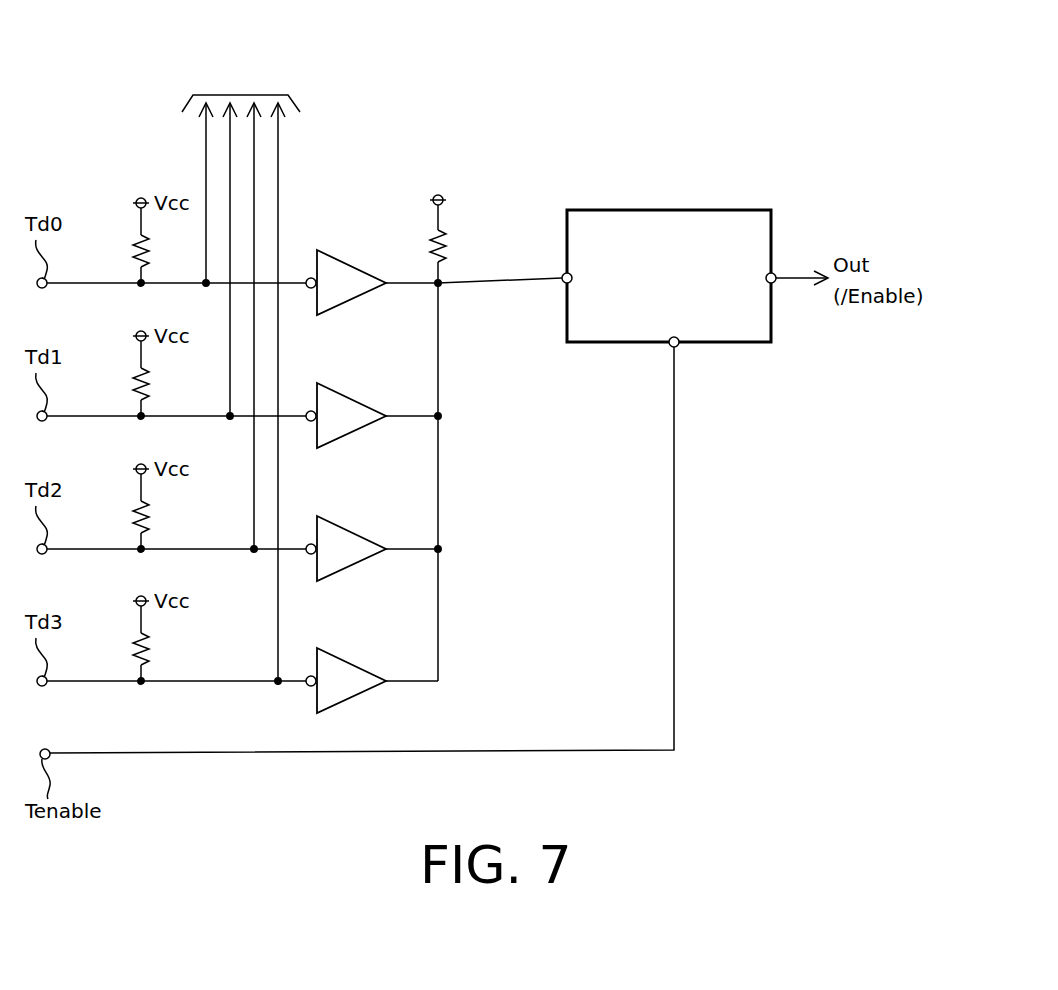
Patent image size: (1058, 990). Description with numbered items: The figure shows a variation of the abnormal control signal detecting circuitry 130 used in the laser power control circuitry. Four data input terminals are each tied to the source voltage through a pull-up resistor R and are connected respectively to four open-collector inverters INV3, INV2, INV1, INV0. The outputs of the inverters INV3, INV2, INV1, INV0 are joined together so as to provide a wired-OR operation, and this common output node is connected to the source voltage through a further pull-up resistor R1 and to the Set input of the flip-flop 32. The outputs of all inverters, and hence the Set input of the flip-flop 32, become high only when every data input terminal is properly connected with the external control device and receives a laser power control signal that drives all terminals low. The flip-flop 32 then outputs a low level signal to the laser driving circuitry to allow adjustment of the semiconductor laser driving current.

The abnormal control signal detecting circuitry 130 is at (378, 92).
The flip-flop 32 is at (637, 208).
The pull-up resistor R is at (148, 436).
The pull-up resistor R1 is at (448, 223).
The open-collector inverter INV0 is at (343, 303).
The open-collector inverter INV1 is at (343, 436).
The open-collector inverter INV2 is at (343, 569).
The open-collector inverter INV3 is at (343, 701).